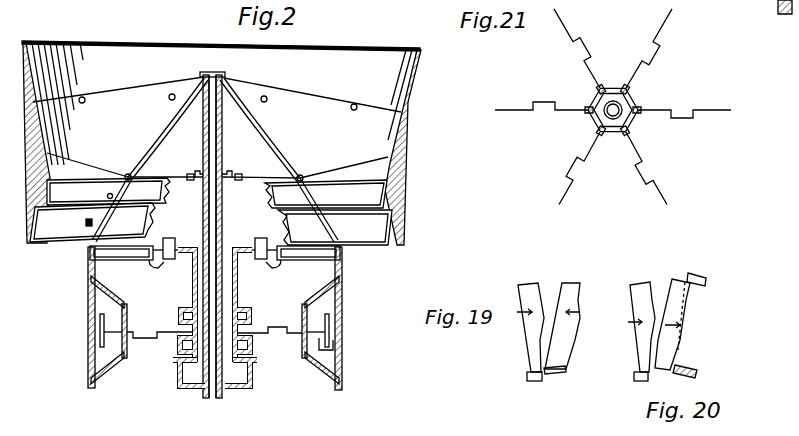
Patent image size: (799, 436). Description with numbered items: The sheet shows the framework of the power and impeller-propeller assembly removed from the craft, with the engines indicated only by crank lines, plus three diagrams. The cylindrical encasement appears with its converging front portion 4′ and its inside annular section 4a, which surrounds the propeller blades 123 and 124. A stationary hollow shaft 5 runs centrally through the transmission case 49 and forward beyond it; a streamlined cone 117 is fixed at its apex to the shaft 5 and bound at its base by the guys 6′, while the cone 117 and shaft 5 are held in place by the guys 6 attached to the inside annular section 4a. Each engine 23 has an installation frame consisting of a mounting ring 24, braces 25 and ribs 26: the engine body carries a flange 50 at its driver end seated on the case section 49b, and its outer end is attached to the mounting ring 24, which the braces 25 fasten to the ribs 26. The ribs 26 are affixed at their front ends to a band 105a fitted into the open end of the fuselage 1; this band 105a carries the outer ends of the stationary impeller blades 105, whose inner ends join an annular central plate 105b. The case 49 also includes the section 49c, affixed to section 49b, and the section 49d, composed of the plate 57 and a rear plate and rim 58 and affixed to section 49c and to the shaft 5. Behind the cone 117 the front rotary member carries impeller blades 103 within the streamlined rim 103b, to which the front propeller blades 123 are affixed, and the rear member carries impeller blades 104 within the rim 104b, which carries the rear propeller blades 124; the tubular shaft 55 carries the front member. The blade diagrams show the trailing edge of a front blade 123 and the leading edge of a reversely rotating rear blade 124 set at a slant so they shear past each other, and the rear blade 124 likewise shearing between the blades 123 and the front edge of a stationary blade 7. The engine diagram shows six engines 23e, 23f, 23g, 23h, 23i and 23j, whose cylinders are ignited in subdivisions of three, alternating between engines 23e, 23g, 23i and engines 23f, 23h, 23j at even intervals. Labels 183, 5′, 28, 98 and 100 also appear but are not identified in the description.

In FIG. 2, the top plate 183 is at (221, 53).
In FIG. 2, the converging front portion 4′ is at (38, 94).
In FIG. 2, the inside annular section 4a is at (40, 157).
In FIG. 2, the guys 6 is at (217, 127).
In FIG. 2, the streamlined cone 117 is at (272, 128).
In FIG. 2, the stationary shaft 5 is at (215, 113).
In FIG. 21, the stationary shaft 5 is at (622, 103).
In FIG. 2, the shaft bore 5′ is at (215, 147).
In FIG. 2, the guys 6′ is at (214, 171).
In FIG. 2, the front propeller blades 123 is at (217, 194).
In FIG. 19, the front propeller blades 123 is at (528, 286).
In FIG. 20, the front propeller blades 123 is at (643, 287).
In FIG. 2, the impeller blades 103 is at (193, 195).
In FIG. 2, the streamlined rim 103b is at (309, 195).
In FIG. 19, the streamlined rim 103b is at (528, 374).
In FIG. 20, the streamlined rim 103b is at (636, 373).
In FIG. 2, the rear propeller blades 124 is at (211, 224).
In FIG. 19, the rear propeller blades 124 is at (572, 288).
In FIG. 20, the rear propeller blades 124 is at (680, 284).
In FIG. 2, the impeller blades 104 is at (192, 221).
In FIG. 20, the impeller blades 104 is at (688, 378).
In FIG. 2, the streamlined rim 104b is at (326, 221).
In FIG. 19, the streamlined rim 104b is at (564, 368).
In FIG. 2, the stationary impeller blades 105 is at (215, 252).
In FIG. 2, the band 105a is at (90, 252).
In FIG. 2, the annular central plate 105b is at (149, 268).
In FIG. 2, the bearing block 28 is at (169, 238).
In FIG. 2, the transmission case 49 is at (192, 279).
In FIG. 2, the transmission case section 49b is at (240, 316).
In FIG. 2, the transmission case section 49c is at (250, 352).
In FIG. 2, the transmission case section 49d is at (255, 366).
In FIG. 2, the flange 50 is at (178, 340).
In FIG. 2, the plate 57 is at (173, 362).
In FIG. 2, the rear plate and rim 58 is at (182, 389).
In FIG. 2, the mounting ring 24 is at (128, 317).
In FIG. 2, the engine 23 is at (214, 332).
In FIG. 2, the ribs 26 is at (122, 355).
In FIG. 2, the braces 25 is at (104, 327).
In FIG. 21, the inner hex ring 98 is at (604, 99).
In FIG. 21, the tubular shaft 55 is at (606, 118).
In FIG. 21, the locking tabs 100 is at (636, 125).
In FIG. 21, the engine 23e is at (566, 48).
In FIG. 21, the engine 23f is at (645, 48).
In FIG. 21, the engine 23g is at (684, 106).
In FIG. 21, the engine 23h is at (659, 168).
In FIG. 21, the engine 23i is at (579, 168).
In FIG. 21, the engine 23j is at (541, 117).
In FIG. 20, the stationary helical blades 7 is at (700, 312).
In FIG. 20, the fuselage 1 is at (696, 366).